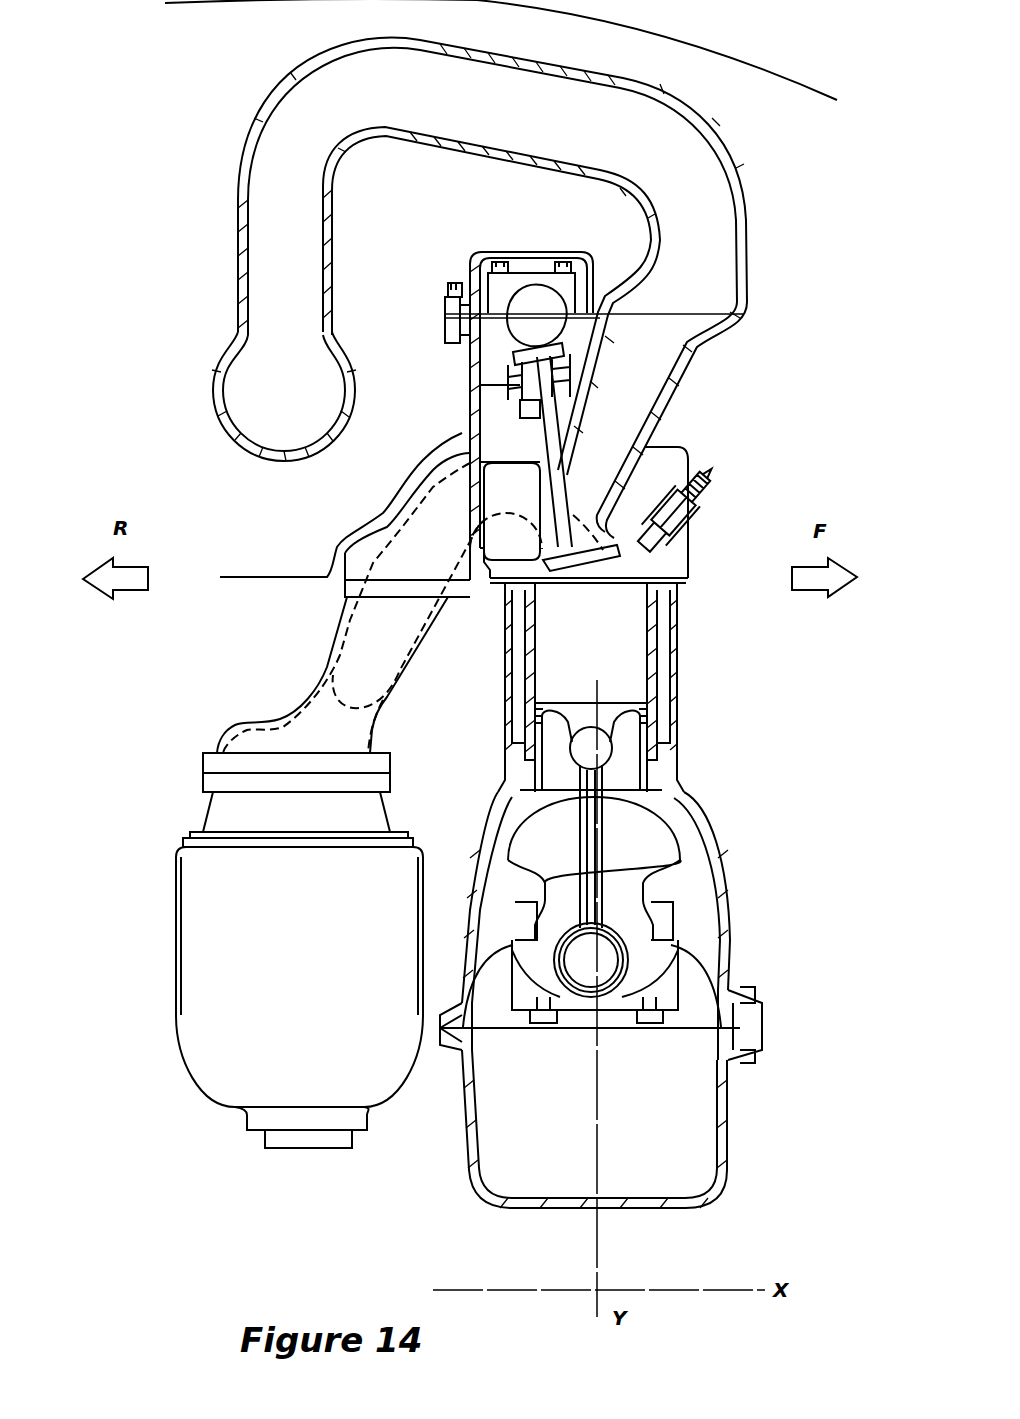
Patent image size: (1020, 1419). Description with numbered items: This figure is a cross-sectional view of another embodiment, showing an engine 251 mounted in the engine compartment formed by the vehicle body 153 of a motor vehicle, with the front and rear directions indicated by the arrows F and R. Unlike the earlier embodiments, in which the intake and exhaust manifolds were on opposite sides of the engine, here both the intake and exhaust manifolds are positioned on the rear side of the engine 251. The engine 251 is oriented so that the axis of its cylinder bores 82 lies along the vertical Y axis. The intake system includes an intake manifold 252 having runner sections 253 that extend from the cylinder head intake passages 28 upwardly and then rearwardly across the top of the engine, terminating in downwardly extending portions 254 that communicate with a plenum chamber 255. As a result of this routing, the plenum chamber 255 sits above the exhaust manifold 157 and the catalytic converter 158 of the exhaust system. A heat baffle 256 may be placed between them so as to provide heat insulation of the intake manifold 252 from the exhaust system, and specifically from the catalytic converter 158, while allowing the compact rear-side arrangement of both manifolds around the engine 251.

The vehicle body 153 is at (725, 57).
The intake manifold 252 is at (501, 58).
The runner sections 253 is at (626, 79).
The downwardly extending portions 254 is at (333, 253).
The plenum chamber 255 is at (357, 393).
The engine 251 is at (782, 342).
The intake passage 28 is at (699, 353).
The cylinder bores 82 is at (641, 657).
The heat baffle 256 is at (282, 577).
The exhaust manifold 157 is at (403, 668).
The catalytic converter 158 is at (300, 921).